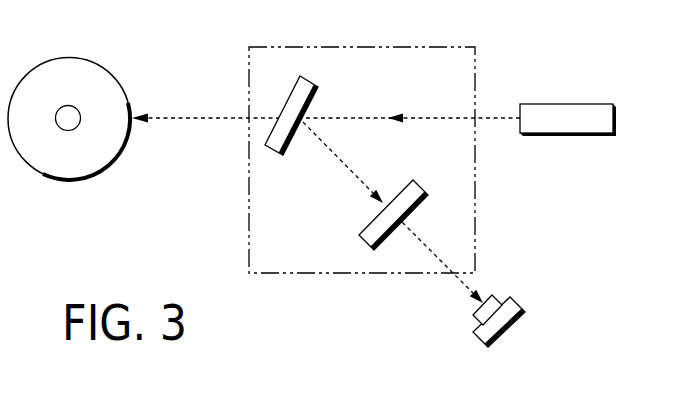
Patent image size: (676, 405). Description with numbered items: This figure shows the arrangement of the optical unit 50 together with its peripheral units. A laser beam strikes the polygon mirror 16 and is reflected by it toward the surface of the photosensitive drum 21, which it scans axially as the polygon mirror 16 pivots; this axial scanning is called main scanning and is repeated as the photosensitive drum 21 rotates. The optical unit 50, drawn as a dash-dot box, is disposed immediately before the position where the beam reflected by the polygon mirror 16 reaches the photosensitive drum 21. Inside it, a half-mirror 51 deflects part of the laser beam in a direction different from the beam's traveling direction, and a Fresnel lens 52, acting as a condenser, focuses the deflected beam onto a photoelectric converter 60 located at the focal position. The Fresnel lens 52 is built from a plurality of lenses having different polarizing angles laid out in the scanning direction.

The polygon mirror 16 is at (565, 103).
The photosensitive drum 21 is at (65, 56).
The optical unit 50 is at (383, 46).
The half-mirror 51 is at (319, 86).
The Fresnel lens 52 is at (431, 170).
The photoelectric converter 60 is at (533, 286).